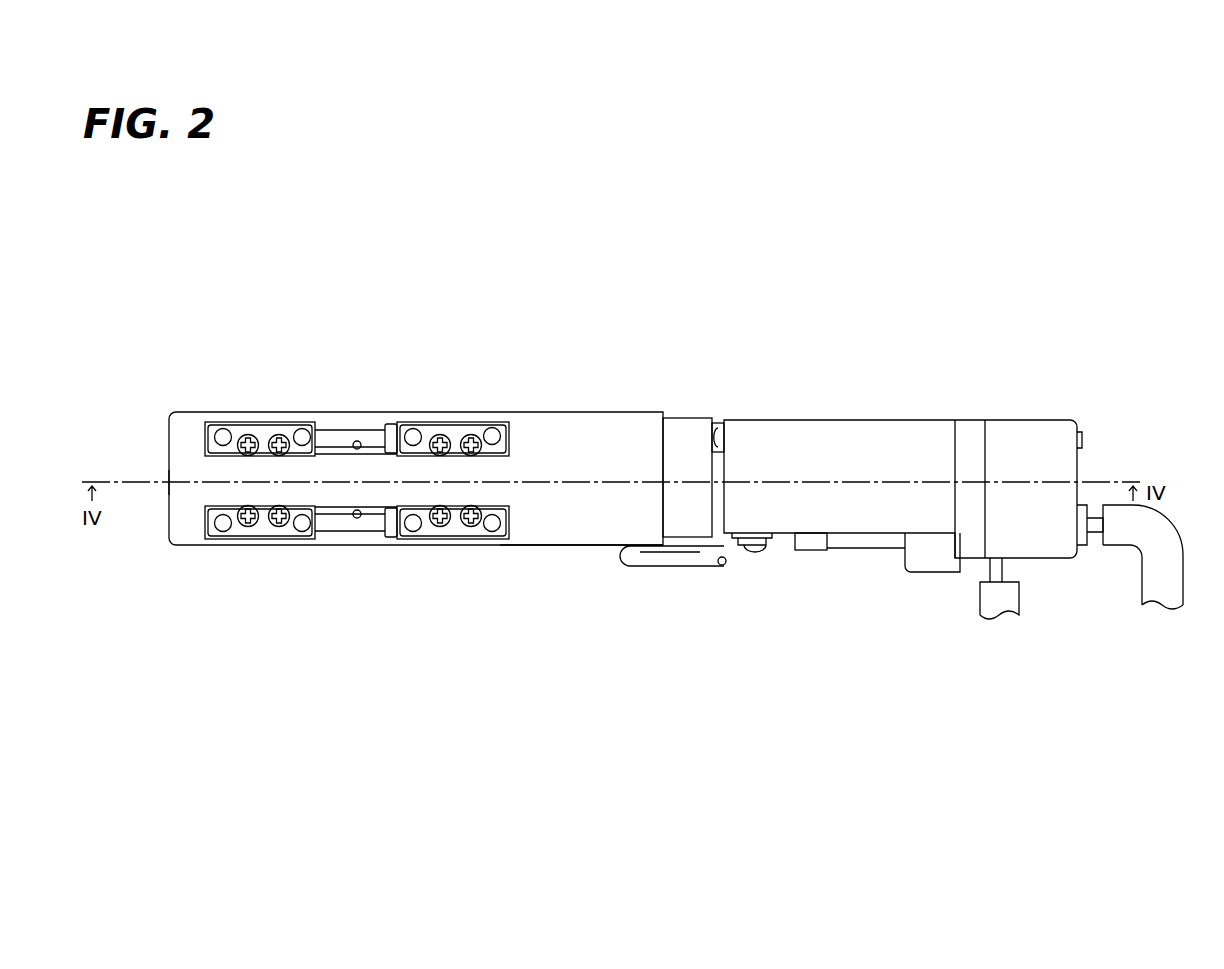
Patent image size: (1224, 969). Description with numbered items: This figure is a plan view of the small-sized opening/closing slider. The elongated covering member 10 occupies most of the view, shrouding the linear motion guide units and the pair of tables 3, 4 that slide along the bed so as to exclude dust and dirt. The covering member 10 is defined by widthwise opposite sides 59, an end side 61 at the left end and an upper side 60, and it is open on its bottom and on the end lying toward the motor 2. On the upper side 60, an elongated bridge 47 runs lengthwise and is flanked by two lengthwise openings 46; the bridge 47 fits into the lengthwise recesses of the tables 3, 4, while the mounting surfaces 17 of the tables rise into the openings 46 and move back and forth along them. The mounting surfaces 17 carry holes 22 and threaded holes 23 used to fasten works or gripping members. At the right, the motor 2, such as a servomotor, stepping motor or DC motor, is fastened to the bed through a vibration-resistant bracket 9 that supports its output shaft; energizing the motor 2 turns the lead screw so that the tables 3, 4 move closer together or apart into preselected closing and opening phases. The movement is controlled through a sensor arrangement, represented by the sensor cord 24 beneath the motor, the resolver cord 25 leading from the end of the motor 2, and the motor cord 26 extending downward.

The motor 2 is at (1033, 440).
The table 3 is at (481, 430).
The table 4 is at (285, 430).
The bracket 9 is at (687, 440).
The covering member 10 is at (580, 428).
The mounting surface 17 is at (269, 430).
The hole 22 is at (247, 505).
The threaded hole 23 is at (304, 514).
The sensor cord 24 is at (689, 566).
The resolver cord 25 is at (1165, 535).
The motor cord 26 is at (1013, 598).
The lengthwise opening 46 is at (212, 422).
The elongated bridge 47 is at (376, 492).
The widthwise opposite side 59 is at (363, 420).
The upper side 60 is at (563, 500).
The end side 61 is at (170, 490).